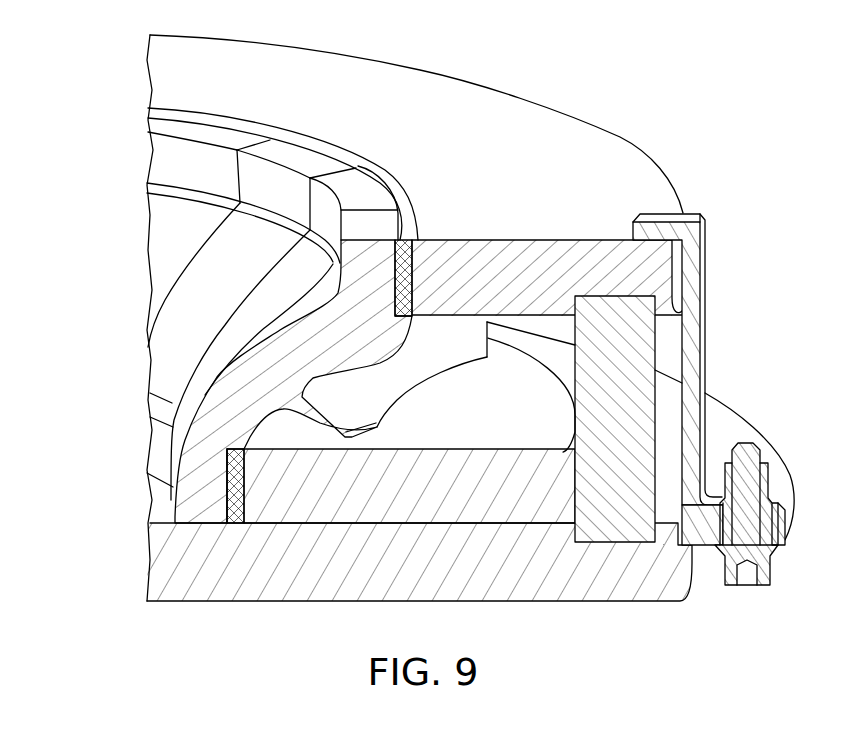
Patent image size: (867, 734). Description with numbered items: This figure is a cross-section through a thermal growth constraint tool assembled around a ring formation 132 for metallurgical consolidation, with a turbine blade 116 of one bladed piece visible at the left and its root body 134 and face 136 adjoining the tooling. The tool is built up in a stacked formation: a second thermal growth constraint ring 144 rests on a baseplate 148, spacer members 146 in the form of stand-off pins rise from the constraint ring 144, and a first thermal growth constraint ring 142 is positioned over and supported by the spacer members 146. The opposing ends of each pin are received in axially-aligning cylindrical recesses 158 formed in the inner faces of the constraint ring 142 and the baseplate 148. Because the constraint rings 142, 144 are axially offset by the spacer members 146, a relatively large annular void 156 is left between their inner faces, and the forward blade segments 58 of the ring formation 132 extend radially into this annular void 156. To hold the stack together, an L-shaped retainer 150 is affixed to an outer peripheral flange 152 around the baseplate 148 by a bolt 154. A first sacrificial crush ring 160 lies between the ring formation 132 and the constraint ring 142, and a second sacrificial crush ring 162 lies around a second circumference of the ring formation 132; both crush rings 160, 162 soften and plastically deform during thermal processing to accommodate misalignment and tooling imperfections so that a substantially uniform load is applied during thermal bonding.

The forward blade segments 58 is at (437, 355).
The turbine blade 116 is at (165, 372).
The ring formation 132 is at (130, 229).
The rotor arm 134 is at (392, 307).
The ring face 136 is at (226, 484).
The first thermal growth constraint ring 142 is at (470, 100).
The second thermal growth constraint ring 144 is at (298, 512).
The spacer members 146 is at (595, 422).
The baseplate 148 is at (537, 590).
The retainers 150 is at (703, 298).
The outer peripheral flange 152 is at (730, 418).
The bolts 154 is at (753, 480).
The annular void 156 is at (503, 424).
The cylindrical recesses 158 is at (600, 295).
The first sacrificial crush ring 160 is at (407, 262).
The second sacrificial crush ring 162 is at (235, 517).